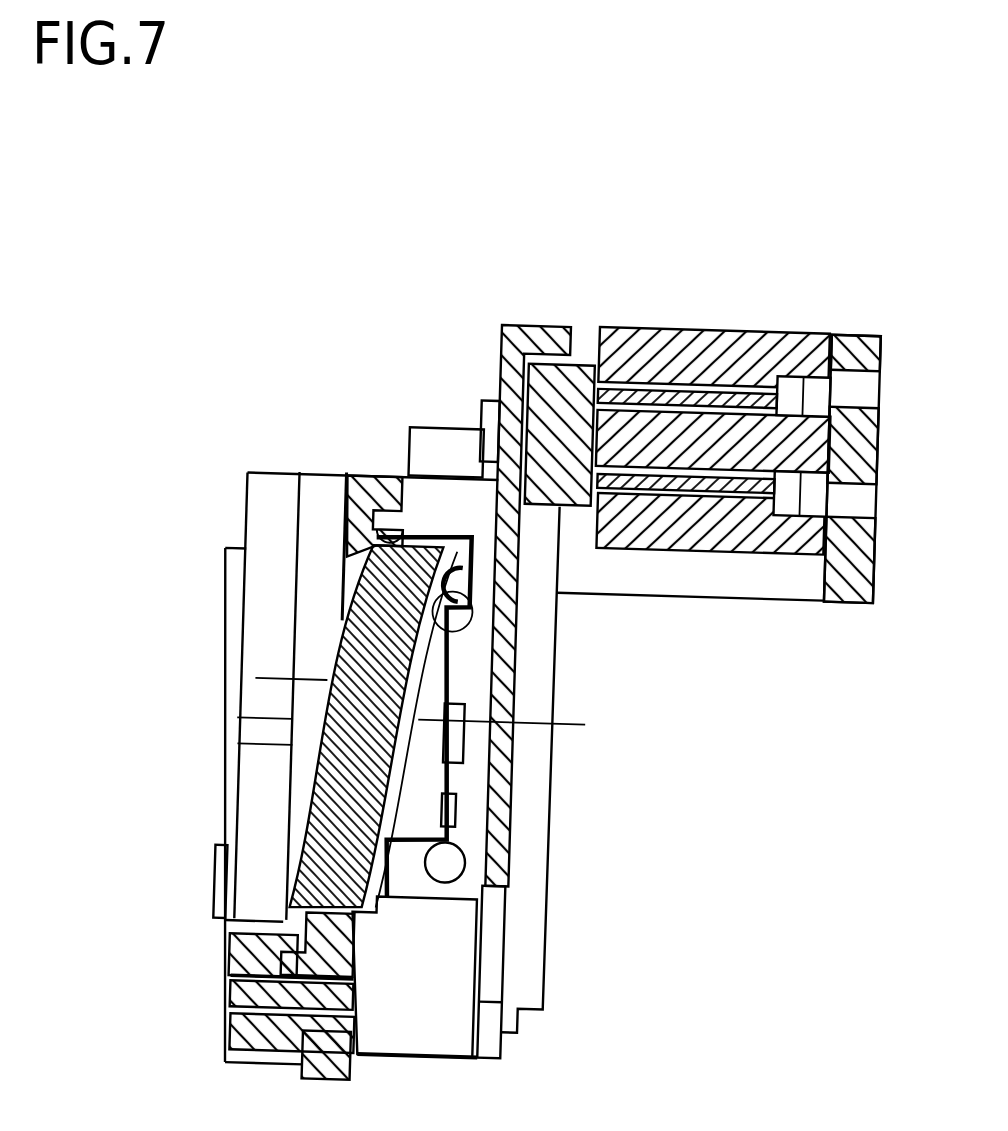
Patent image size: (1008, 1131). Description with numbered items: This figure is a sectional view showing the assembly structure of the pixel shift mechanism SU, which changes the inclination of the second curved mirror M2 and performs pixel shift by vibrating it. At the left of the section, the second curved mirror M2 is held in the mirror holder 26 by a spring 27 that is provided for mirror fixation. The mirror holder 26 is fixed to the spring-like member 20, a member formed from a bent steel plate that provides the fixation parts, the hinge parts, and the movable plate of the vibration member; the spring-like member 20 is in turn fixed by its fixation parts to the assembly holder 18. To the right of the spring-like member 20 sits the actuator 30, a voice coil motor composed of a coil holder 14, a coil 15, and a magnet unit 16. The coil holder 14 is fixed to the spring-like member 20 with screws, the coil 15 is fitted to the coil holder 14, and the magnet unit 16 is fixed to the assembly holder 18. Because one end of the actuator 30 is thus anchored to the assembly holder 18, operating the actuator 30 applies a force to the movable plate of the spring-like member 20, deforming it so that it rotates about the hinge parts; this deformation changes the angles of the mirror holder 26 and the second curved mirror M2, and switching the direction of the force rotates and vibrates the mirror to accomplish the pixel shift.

The actuator 30 is at (717, 405).
The coil holder 14 is at (542, 373).
The coil 15 is at (667, 393).
The magnet unit 16 is at (845, 434).
The spring-like member 20 is at (503, 370).
The mirror holder 26 is at (357, 495).
The spring 27 is at (455, 657).
The assembly holder 18 is at (546, 980).
The second curved mirror M2 is at (270, 681).
The pixel shift mechanism SU is at (796, 803).